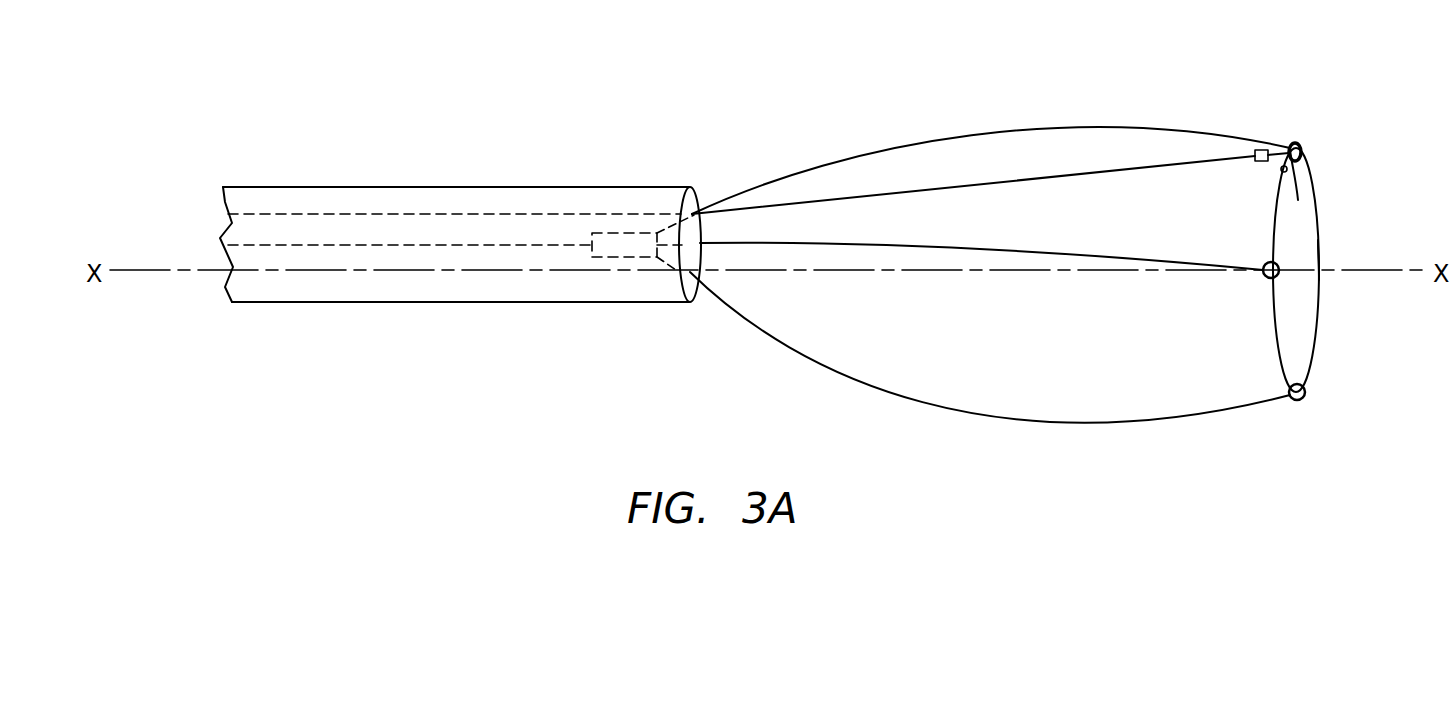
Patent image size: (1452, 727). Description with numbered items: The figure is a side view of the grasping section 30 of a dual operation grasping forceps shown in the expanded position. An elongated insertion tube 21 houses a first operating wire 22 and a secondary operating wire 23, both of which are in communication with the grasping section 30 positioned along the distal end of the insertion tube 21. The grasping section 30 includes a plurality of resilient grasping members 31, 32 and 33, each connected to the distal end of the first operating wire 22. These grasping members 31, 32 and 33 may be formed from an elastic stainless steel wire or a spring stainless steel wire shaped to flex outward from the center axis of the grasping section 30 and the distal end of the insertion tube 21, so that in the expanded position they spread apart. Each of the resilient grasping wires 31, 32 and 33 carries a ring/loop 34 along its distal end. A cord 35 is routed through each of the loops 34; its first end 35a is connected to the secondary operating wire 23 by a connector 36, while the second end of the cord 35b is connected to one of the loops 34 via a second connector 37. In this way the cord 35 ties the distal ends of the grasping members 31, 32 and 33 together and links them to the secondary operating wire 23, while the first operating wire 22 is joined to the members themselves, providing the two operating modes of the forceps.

The insertion tube 21 is at (370, 302).
The first operating wire 22 is at (533, 247).
The secondary operating wire 23 is at (1100, 160).
The grasping section 30 is at (722, 136).
The resilient grasping member 31 is at (952, 137).
The resilient grasping member 32 is at (972, 249).
The resilient grasping member 33 is at (1003, 428).
The ring/loop 34 is at (1303, 147).
The cord 35 is at (1320, 298).
The first end of the cord 35a is at (1288, 144).
The second end of the cord 35b is at (1300, 222).
The connector 36 is at (1260, 150).
The second connector 37 is at (1281, 171).